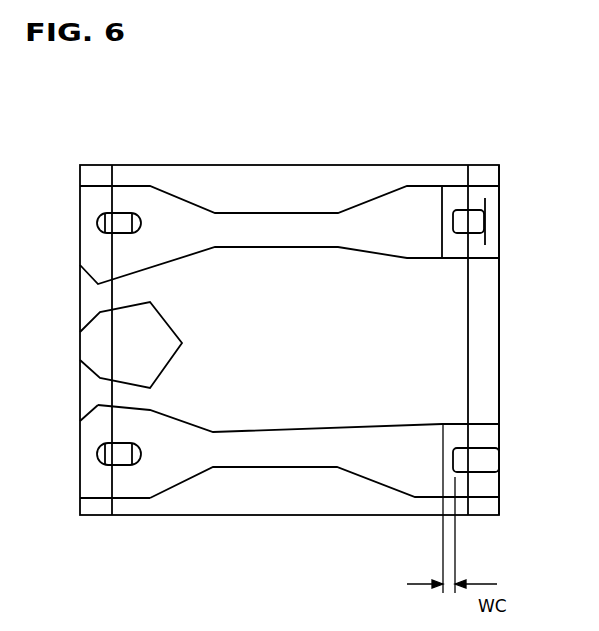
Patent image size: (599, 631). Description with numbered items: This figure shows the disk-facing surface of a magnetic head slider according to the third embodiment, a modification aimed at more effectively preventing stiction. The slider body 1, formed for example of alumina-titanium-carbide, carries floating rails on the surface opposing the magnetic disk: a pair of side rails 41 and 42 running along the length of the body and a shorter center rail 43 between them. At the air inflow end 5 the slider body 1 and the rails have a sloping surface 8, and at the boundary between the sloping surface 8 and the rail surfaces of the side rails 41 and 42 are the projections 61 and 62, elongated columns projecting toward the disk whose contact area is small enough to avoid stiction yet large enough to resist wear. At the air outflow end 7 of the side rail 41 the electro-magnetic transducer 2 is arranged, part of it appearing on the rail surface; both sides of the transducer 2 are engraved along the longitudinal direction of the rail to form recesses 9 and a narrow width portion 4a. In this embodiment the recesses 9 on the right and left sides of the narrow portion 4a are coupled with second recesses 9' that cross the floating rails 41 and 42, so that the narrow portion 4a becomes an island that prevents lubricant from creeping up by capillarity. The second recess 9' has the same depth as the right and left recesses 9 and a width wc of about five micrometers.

The slider body 1 is at (272, 507).
The electro-magnetic transducer 2 is at (486, 227).
The narrow width portion 4a is at (465, 218).
The air inflow end 5 is at (78, 295).
The air outflow end 7 is at (501, 332).
The sloping surface 8 is at (90, 433).
The recesses 9 is at (507, 361).
The second recesses 9' is at (429, 347).
The side rail 41 is at (273, 223).
The side rail 42 is at (228, 465).
The center rail 43 is at (160, 324).
The projection 61 is at (124, 213).
The projection 62 is at (123, 465).